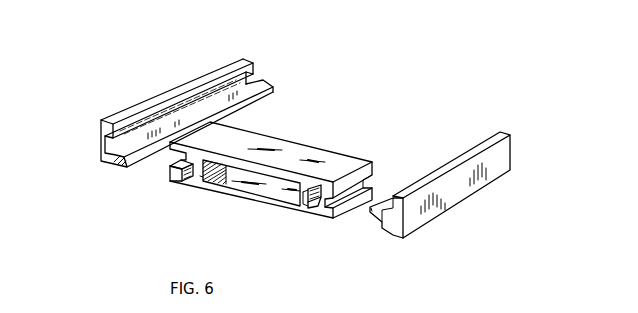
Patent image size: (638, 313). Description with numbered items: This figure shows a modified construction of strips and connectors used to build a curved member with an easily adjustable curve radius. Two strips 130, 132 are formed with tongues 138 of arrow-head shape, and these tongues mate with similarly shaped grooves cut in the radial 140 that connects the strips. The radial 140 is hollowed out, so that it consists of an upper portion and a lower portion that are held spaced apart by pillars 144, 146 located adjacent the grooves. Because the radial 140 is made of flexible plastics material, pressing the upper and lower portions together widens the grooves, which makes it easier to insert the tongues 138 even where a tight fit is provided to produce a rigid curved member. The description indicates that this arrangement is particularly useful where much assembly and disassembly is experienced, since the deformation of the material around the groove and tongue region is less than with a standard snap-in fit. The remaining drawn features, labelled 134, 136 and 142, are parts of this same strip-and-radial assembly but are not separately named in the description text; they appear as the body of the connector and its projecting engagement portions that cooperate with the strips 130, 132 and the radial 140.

The strip 130 is at (187, 87).
The strip 132 is at (460, 158).
The carrier plate 134 is at (313, 143).
The right guide tab 136 is at (315, 205).
The tongue 138 is at (374, 206).
The radial 140 is at (214, 156).
The front wall 142 is at (255, 200).
The pillar 144 is at (197, 175).
The pillar 146 is at (305, 203).